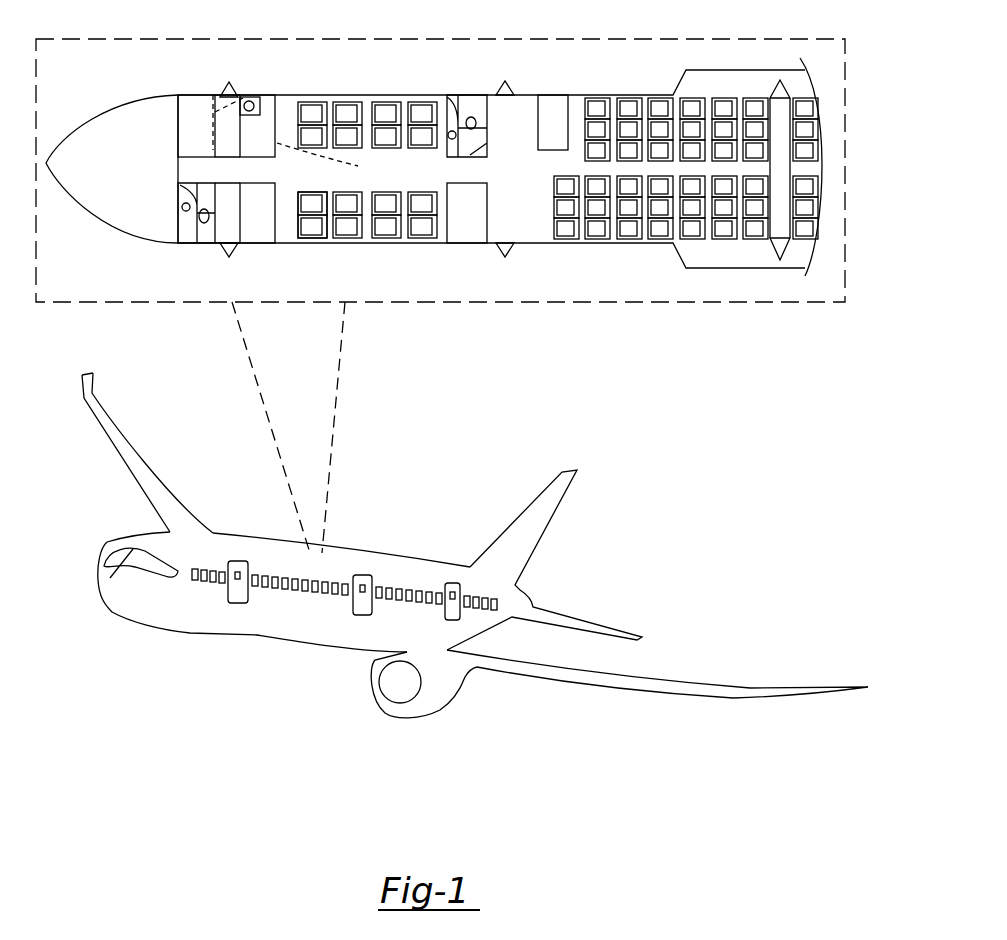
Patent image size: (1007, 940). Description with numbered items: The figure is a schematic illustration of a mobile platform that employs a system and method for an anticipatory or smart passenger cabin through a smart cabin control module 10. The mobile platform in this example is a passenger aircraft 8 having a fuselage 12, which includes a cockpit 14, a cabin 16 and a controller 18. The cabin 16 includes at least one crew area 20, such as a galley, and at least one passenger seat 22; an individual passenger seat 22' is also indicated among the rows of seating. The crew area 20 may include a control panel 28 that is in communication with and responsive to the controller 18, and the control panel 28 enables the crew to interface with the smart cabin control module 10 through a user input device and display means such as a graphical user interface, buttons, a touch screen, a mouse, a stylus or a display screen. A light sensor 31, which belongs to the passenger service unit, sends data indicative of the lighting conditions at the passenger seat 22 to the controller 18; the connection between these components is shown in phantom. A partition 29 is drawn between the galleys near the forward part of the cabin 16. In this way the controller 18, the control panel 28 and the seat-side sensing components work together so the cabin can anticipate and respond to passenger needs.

The passenger aircraft 8 is at (84, 503).
The smart cabin control module 10 is at (247, 98).
The fuselage 12 is at (163, 620).
The cockpit 14 is at (118, 215).
The cabin 16 is at (379, 93).
The controller 18 is at (263, 95).
The crew area 20 is at (178, 128).
The passenger seat 22 is at (558, 168).
The passenger seat 22' is at (317, 199).
The control panel 28 is at (213, 158).
The partition 29 is at (213, 95).
The light sensor 31 is at (300, 140).